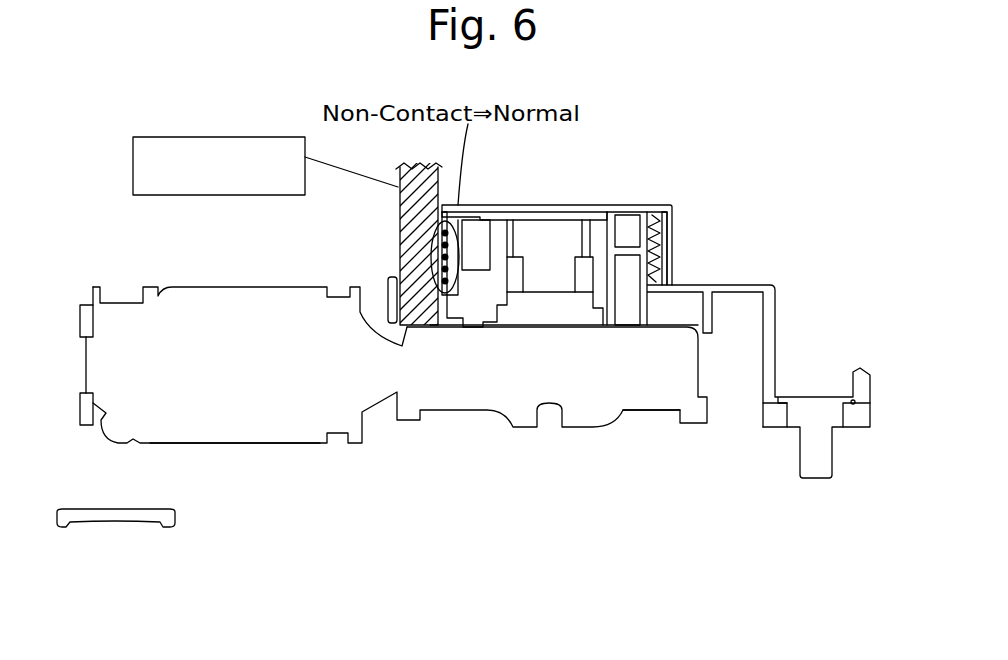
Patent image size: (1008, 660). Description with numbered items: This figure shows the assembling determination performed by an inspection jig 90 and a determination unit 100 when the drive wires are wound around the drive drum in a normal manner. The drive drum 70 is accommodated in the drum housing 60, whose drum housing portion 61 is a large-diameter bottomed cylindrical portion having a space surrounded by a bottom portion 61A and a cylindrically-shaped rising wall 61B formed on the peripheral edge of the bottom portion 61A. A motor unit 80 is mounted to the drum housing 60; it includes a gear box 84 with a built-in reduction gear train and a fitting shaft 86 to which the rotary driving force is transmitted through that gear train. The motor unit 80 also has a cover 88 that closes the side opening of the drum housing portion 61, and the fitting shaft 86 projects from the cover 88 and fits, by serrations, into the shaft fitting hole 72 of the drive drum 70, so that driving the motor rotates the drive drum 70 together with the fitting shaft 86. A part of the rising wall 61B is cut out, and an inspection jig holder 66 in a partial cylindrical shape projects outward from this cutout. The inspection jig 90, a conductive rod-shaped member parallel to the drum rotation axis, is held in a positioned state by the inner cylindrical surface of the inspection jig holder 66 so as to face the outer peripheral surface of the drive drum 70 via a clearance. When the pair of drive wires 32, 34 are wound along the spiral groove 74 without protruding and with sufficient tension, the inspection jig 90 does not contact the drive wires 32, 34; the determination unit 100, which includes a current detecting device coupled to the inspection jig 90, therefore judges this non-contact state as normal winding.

The determination unit 100 is at (258, 137).
The inspection jig 90 is at (400, 226).
The drive wire 32 is at (376, 257).
The drive wire 34 is at (432, 256).
The motor unit 80 is at (204, 284).
The inspection jig holder 66 is at (392, 305).
The gear box 84 is at (233, 422).
The fitting shaft 86 is at (541, 294).
The cover 88 is at (642, 395).
The drum housing portion 61 is at (625, 255).
The bottom portion 61A is at (600, 207).
The rising wall 61B is at (663, 245).
The shaft fitting hole 72 is at (514, 212).
The drive drum 70 is at (624, 230).
The spiral groove 74 is at (663, 228).
The drum housing 60 is at (776, 283).